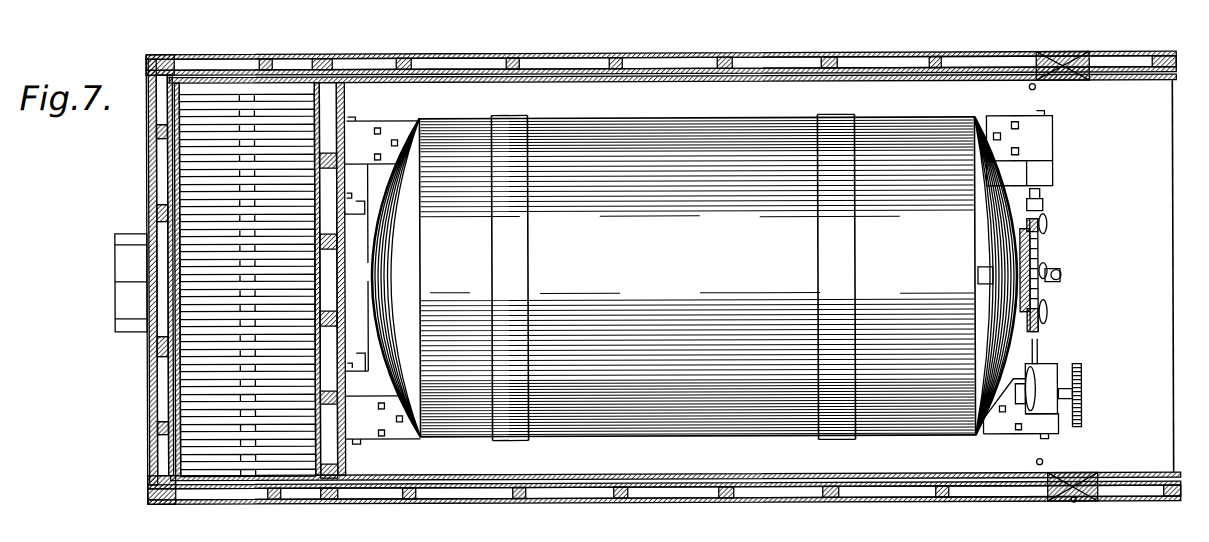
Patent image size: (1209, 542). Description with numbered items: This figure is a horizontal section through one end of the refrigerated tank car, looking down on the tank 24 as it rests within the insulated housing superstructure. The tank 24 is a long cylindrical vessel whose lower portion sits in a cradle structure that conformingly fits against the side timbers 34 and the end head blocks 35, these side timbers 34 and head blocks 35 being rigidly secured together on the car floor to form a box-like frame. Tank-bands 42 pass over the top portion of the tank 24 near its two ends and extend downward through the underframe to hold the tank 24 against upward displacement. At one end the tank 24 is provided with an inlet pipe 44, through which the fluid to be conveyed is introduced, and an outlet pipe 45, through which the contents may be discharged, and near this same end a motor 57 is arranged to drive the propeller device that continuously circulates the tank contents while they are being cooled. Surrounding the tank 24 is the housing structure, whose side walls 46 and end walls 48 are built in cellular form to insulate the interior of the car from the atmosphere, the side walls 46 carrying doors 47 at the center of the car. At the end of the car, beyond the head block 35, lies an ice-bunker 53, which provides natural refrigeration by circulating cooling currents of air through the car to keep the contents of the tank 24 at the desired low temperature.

The tank 24 is at (694, 277).
The side timbers 34 is at (363, 127).
The head blocks 35 is at (372, 245).
The tank-bands 42 is at (512, 118).
The inlet pipes 44 is at (985, 268).
The outlet pipes 45 is at (1060, 275).
The side walls 46 is at (641, 498).
The doors 47 is at (1136, 55).
The end walls 48 is at (166, 393).
The ice-bunkers 53 is at (196, 201).
The motor 57 is at (1046, 386).